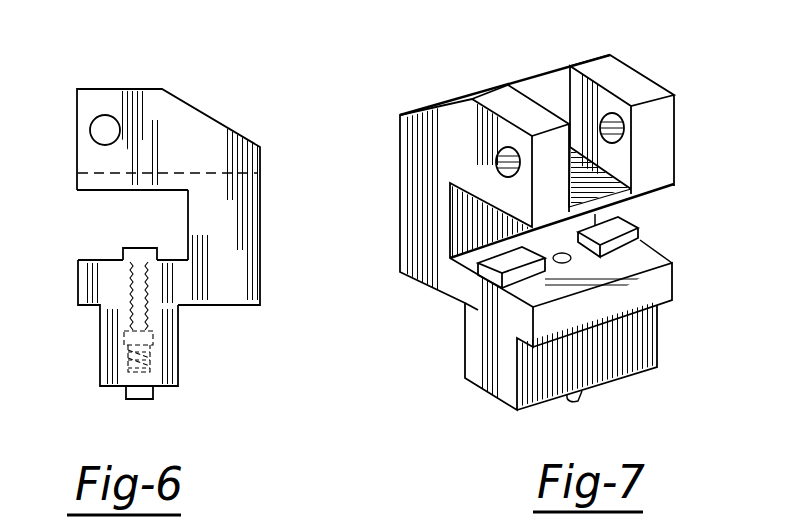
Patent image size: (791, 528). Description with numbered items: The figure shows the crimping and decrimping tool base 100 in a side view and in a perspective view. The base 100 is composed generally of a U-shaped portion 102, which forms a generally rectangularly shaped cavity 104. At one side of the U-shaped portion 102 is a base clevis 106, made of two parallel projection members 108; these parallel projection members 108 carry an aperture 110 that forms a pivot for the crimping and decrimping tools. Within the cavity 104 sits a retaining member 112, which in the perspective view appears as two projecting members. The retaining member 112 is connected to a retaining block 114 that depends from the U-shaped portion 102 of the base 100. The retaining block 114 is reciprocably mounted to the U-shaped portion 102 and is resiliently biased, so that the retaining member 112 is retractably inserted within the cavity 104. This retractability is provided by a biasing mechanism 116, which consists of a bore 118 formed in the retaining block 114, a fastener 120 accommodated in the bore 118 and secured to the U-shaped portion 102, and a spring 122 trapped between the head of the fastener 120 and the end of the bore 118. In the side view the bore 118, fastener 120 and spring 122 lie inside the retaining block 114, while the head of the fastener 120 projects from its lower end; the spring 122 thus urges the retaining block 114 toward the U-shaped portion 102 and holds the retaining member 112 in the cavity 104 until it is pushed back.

In FIG. 6, the base 100 is at (224, 118).
In FIG. 6, the U-shaped portion 102 is at (258, 238).
In FIG. 7, the U-shaped portion 102 is at (522, 212).
In FIG. 6, the cavity 104 is at (82, 246).
In FIG. 7, the cavity 104 is at (549, 308).
In FIG. 6, the base clevis 106 is at (147, 86).
In FIG. 7, the base clevis 106 is at (551, 97).
In FIG. 6, the parallel projection members 108 is at (193, 145).
In FIG. 7, the parallel projection members 108 is at (571, 123).
In FIG. 6, the aperture 110 is at (102, 117).
In FIG. 7, the aperture 110 is at (494, 104).
In FIG. 6, the retaining member 112 is at (168, 208).
In FIG. 7, the retaining member 112 is at (480, 255).
In FIG. 6, the retaining block 114 is at (101, 333).
In FIG. 7, the retaining block 114 is at (657, 340).
In FIG. 6, the biasing mechanism 116 is at (166, 350).
In FIG. 6, the bore 118 is at (117, 347).
In FIG. 6, the fastener 120 is at (153, 391).
In FIG. 7, the fastener 120 is at (574, 399).
In FIG. 6, the spring 122 is at (100, 368).